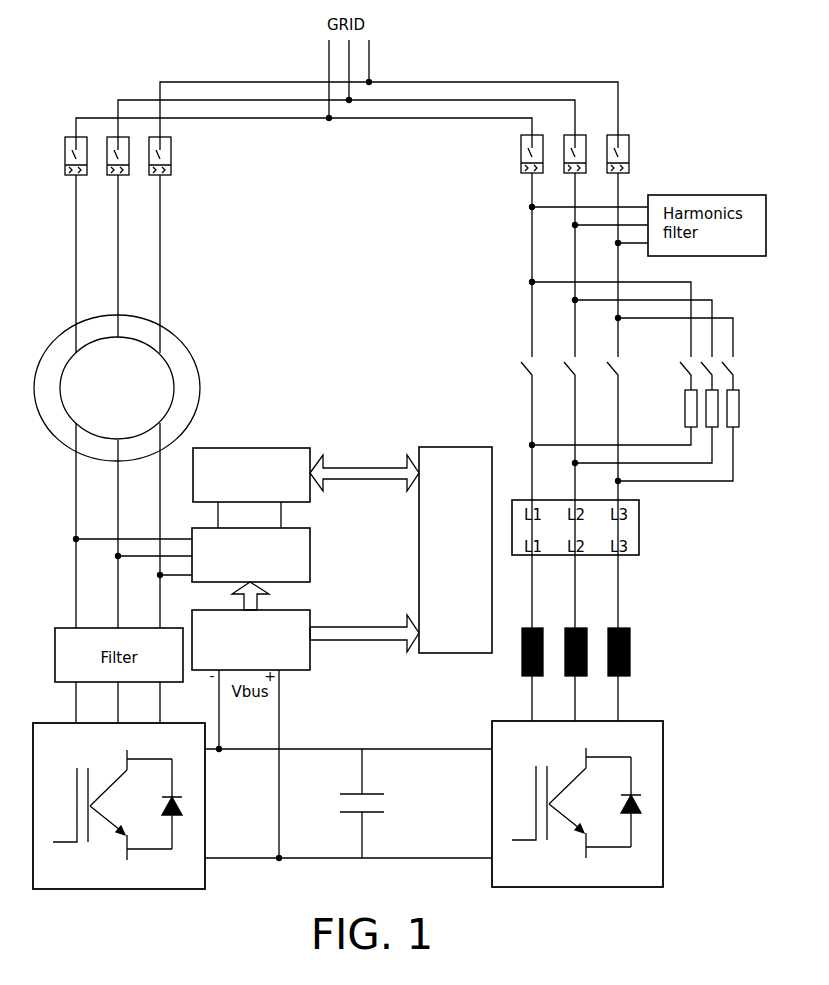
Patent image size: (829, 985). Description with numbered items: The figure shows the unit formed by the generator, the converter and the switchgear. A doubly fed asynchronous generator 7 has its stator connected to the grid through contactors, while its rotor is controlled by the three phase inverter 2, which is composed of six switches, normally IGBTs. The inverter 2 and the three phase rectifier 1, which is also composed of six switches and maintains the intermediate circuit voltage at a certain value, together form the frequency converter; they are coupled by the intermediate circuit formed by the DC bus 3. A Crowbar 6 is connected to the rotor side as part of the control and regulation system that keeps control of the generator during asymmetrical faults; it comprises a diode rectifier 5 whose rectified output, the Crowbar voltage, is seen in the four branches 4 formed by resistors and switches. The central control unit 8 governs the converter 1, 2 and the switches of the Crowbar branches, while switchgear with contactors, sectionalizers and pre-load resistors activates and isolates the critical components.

The rectifier 1 is at (605, 806).
The inverter 2 is at (144, 809).
The DC bus 3 is at (389, 803).
The branches 4 is at (606, 649).
The diode rectifier 5 is at (277, 599).
The Crowbar 6 is at (251, 464).
The doubly fed asynchronous generator 7 is at (140, 388).
The central control unit 8 is at (455, 538).